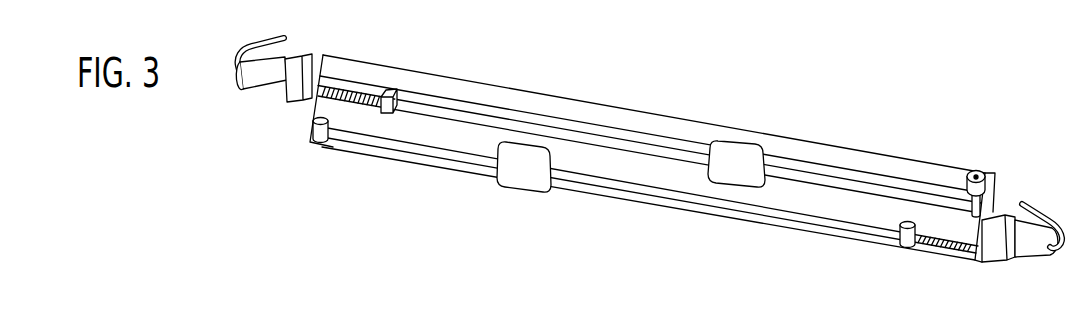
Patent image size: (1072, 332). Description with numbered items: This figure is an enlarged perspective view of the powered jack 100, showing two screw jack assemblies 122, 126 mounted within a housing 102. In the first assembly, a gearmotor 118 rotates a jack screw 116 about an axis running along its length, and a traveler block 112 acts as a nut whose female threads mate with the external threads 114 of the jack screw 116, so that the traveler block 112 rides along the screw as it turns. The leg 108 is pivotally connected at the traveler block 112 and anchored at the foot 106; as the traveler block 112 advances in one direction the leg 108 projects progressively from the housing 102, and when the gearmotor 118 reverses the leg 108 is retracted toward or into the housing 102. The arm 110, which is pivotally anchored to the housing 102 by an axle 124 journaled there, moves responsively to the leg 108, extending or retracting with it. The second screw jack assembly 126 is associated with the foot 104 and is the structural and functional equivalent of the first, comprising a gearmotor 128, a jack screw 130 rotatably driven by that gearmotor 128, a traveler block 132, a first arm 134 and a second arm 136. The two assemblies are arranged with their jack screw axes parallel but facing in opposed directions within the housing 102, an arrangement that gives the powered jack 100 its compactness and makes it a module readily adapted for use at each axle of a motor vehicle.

The powered jack 100 is at (918, 108).
The housing 102 is at (611, 99).
The foot 104 is at (510, 194).
The foot 106 is at (748, 148).
The leg 108 is at (647, 150).
The arm 110 is at (836, 186).
The traveler block 112 is at (388, 90).
The external threads 114 is at (350, 86).
The jack screw 116 is at (357, 109).
The gearmotor 118 is at (296, 109).
The screw jack assembly 122 is at (1002, 108).
The axle 124 is at (991, 155).
The screw jack assembly 126 is at (275, 158).
The gearmotor 128 is at (1061, 268).
The jack screw 130 is at (960, 258).
The traveler block 132 is at (905, 248).
The first arm 134 is at (671, 199).
The second arm 136 is at (412, 150).